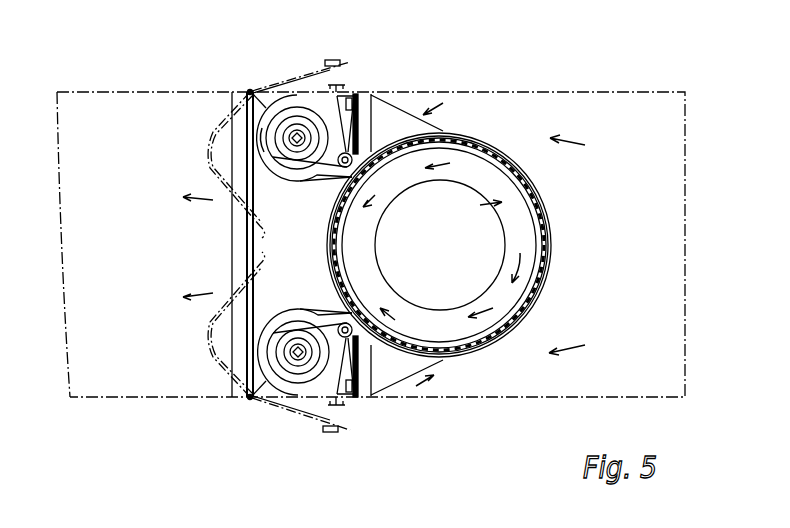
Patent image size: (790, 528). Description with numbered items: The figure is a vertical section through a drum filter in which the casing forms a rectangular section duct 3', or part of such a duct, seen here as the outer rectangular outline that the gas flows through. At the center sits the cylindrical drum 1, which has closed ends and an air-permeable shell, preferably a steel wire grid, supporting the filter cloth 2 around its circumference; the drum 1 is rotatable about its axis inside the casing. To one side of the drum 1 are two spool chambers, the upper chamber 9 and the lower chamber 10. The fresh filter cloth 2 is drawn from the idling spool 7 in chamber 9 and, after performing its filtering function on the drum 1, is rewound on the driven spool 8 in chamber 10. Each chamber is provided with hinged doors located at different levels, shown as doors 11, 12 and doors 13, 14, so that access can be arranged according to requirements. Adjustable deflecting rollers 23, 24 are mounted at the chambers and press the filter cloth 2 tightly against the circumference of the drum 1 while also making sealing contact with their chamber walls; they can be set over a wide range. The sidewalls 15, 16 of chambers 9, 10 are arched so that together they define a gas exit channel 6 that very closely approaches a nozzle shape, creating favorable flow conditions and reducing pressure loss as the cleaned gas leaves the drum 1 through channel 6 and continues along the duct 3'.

The cylindrical drum 1 is at (548, 255).
The filter cloth 2 is at (547, 213).
The rectangular section duct 3' is at (371, 224).
The gas exit channel 6 is at (258, 252).
The idling spool 7 is at (293, 128).
The driven spool 8 is at (300, 380).
The chamber 9 is at (249, 91).
The chamber 10 is at (252, 399).
The hinged door 11 is at (300, 72).
The hinged door 12 is at (347, 431).
The hinged door 13 is at (205, 340).
The hinged door 14 is at (207, 145).
The sidewall 15 is at (286, 179).
The sidewall 16 is at (266, 318).
The adjustable deflecting roller 23 is at (338, 175).
The adjustable deflecting roller 24 is at (340, 320).